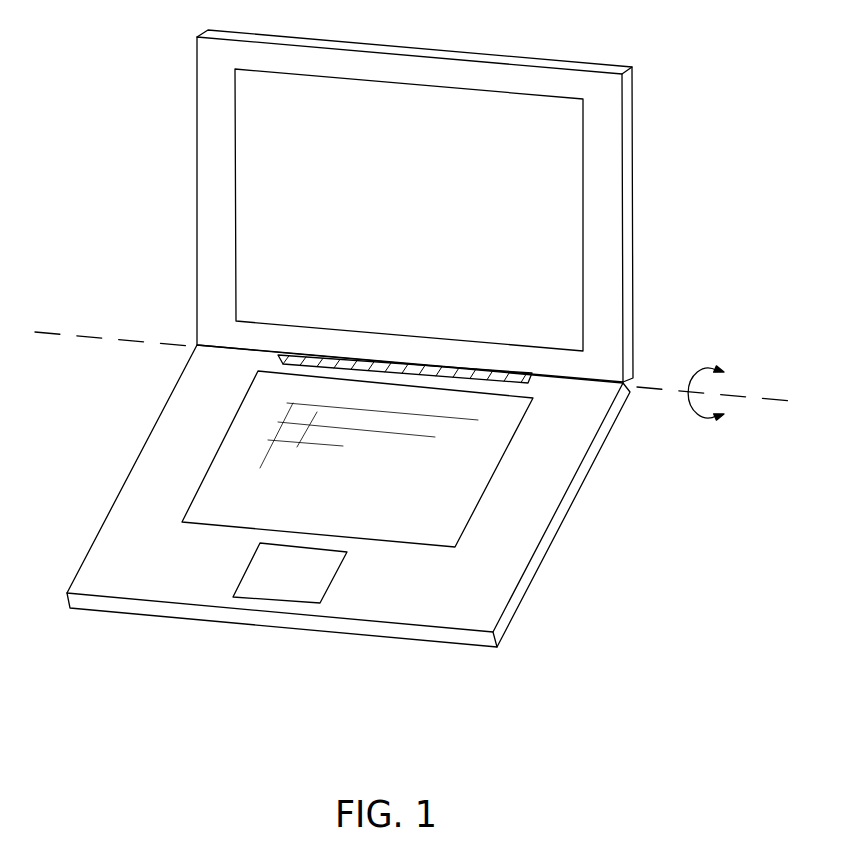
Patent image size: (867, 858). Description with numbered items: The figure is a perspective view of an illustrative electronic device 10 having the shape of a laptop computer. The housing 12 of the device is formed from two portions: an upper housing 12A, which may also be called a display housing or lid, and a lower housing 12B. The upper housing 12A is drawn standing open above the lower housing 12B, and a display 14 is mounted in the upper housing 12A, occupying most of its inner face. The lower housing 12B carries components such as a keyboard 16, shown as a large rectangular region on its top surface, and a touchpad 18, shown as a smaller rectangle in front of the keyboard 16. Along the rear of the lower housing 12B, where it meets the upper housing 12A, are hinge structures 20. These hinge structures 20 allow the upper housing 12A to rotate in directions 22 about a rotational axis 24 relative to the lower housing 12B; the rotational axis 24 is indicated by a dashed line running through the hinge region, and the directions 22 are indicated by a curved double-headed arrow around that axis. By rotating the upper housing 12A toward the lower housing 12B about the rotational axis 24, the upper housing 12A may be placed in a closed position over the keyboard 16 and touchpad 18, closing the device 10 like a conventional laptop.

The electronic device 10 is at (706, 65).
The housing 12 is at (635, 322).
The upper housing 12A is at (182, 37).
The lower housing 12B is at (177, 352).
The display 14 is at (547, 198).
The keyboard 16 is at (487, 477).
The touchpad 18 is at (335, 582).
The hinge structures 20 is at (508, 362).
The directions 22 is at (697, 423).
The rotational axis 24 is at (80, 333).